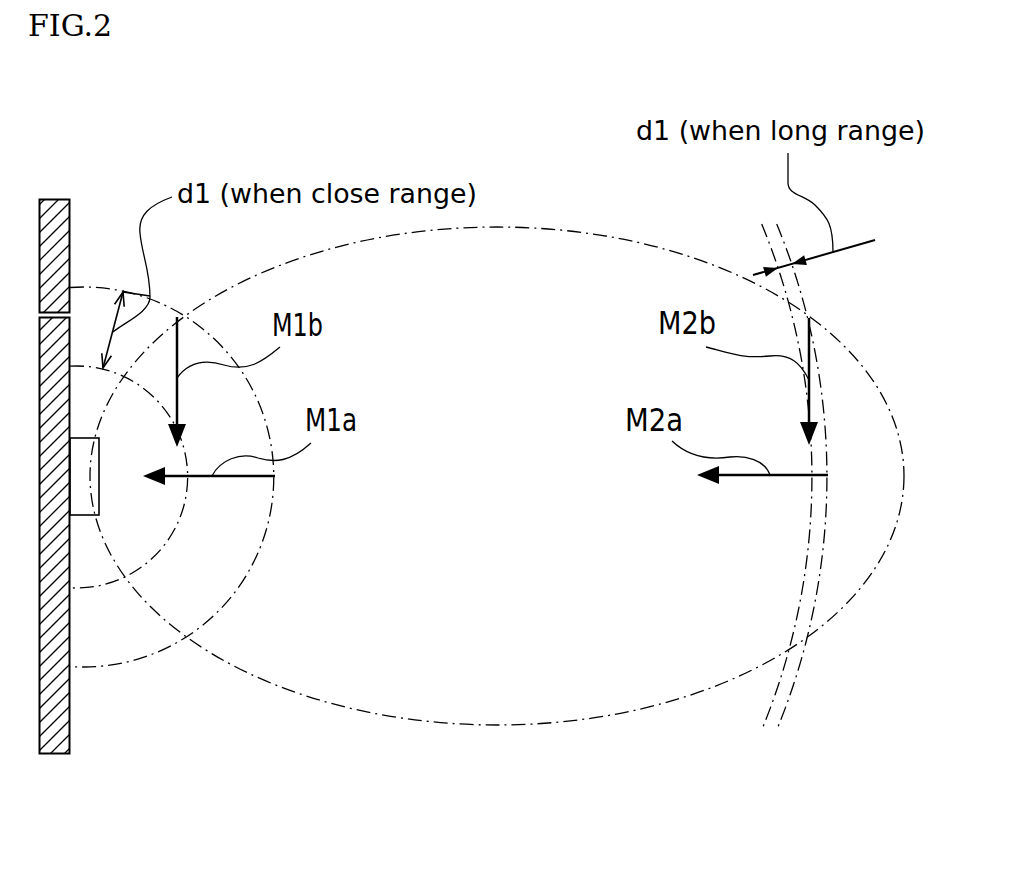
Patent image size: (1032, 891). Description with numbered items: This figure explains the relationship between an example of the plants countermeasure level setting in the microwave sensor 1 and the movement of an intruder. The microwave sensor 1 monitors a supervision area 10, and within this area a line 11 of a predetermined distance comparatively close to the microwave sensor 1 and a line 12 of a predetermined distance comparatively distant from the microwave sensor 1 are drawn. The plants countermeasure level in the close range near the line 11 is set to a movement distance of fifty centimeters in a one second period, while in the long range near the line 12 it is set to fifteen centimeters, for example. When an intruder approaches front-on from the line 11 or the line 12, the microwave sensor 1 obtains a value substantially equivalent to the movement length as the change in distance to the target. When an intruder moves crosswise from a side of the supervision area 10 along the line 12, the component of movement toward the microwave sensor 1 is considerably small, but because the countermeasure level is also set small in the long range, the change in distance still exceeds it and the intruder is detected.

The microwave sensor 1 is at (99, 492).
The supervision area 10 is at (490, 725).
The line of a predetermined distance comparatively close to the microwave sensor 11 is at (233, 595).
The line of a predetermined distance comparatively distant from the microwave sensor 12 is at (800, 662).